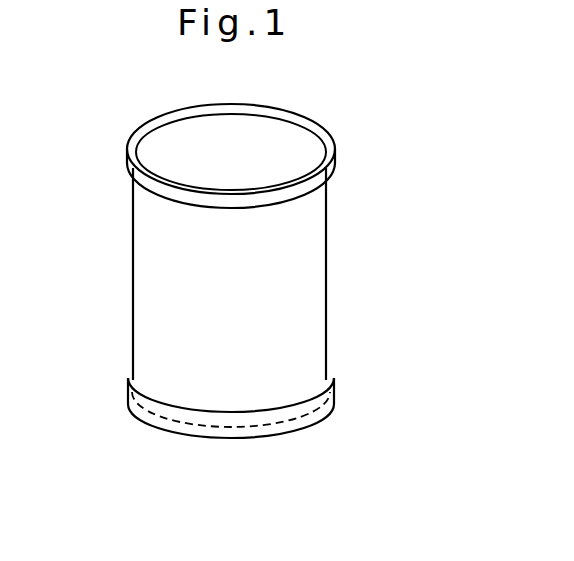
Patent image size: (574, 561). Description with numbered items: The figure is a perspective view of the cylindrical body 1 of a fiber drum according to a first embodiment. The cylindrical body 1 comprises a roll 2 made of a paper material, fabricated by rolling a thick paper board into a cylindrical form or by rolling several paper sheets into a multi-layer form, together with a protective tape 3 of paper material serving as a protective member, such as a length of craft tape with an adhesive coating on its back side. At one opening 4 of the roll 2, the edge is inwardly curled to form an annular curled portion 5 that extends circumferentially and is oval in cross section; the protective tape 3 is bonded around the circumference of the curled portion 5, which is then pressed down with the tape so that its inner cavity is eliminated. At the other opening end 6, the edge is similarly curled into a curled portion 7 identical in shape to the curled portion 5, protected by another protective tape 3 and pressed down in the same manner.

The cylindrical body 1 is at (348, 247).
The roll 2 is at (303, 343).
The protective tape 3 is at (295, 188).
The opening 4 is at (266, 153).
The curled portion 5 is at (147, 130).
The other opening end 6 is at (280, 443).
The curled portion 7 is at (160, 415).